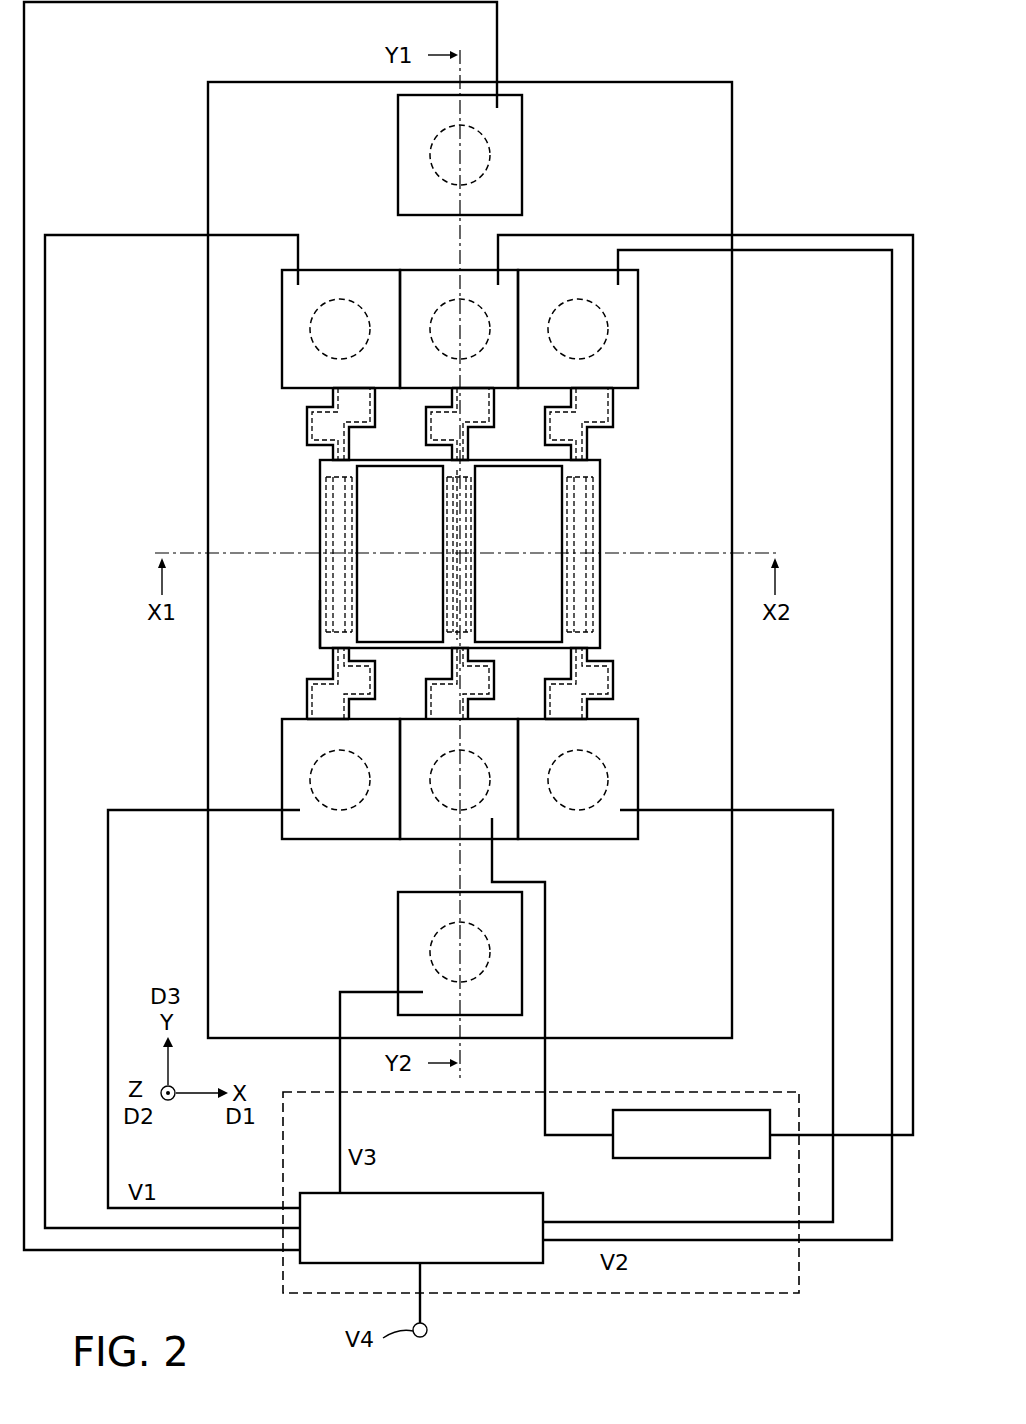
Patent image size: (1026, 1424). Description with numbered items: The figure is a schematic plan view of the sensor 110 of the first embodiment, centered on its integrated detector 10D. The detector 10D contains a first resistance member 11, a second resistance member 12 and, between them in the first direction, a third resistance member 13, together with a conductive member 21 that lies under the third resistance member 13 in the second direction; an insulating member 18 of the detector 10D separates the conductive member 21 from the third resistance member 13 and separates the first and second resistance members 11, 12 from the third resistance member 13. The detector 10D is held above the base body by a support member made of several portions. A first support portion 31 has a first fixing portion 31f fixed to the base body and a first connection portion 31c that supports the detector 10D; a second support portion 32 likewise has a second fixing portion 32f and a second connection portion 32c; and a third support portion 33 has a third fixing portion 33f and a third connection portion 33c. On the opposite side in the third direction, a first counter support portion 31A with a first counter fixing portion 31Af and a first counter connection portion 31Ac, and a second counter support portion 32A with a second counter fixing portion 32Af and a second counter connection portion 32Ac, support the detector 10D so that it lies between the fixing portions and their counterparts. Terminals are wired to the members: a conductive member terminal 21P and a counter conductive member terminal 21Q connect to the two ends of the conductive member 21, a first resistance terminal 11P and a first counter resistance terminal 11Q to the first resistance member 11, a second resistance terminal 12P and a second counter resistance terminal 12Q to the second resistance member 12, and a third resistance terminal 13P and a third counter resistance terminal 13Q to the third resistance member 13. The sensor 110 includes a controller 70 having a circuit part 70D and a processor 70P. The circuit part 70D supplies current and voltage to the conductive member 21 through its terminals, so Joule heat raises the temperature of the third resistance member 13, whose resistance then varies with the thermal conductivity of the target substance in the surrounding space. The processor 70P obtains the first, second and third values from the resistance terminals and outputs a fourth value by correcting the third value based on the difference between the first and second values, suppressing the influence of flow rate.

The sensor 110 is at (776, 80).
The controller 70 is at (800, 1256).
The processor 70P is at (446, 1192).
The circuit part 70D is at (656, 1160).
The third resistance terminal 13P is at (508, 142).
The first resistance terminal 11P is at (333, 287).
The conductive member terminal 21P is at (447, 332).
The second resistance terminal 12P is at (622, 307).
The first counter resistance terminal 11Q is at (300, 770).
The counter conductive member terminal 21Q is at (497, 743).
The second counter resistance terminal 12Q is at (620, 792).
The third counter resistance terminal 13Q is at (417, 927).
The detector 10D is at (302, 472).
The first resistance member 11 is at (327, 508).
The second resistance member 12 is at (583, 490).
The third resistance member 13 is at (445, 530).
The conductive member 21 is at (473, 530).
The insulating member 18 is at (323, 605).
The third support portion 33 is at (135, 22).
The third fixing portion 33f is at (432, 288).
The third connection portion 33c is at (420, 413).
The first support portion 31 is at (135, 283).
The first fixing portion 31f is at (302, 348).
The first connection portion 31c is at (308, 432).
The second support portion 32 is at (803, 354).
The second fixing portion 32f is at (620, 362).
The second connection portion 32c is at (615, 417).
The first counter support portion 31A is at (130, 680).
The first counter connection portion 31Ac is at (307, 694).
The first counter fixing portion 31Af is at (300, 743).
The second counter support portion 32A is at (808, 648).
The second counter connection portion 32Ac is at (613, 680).
The second counter fixing portion 32Af is at (615, 730).